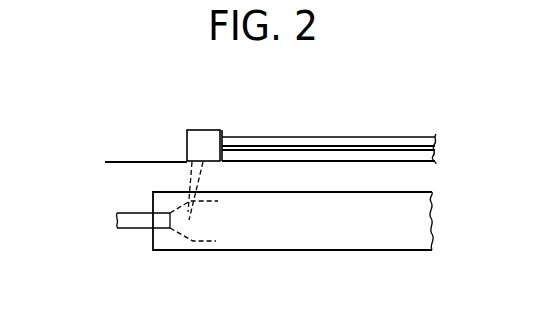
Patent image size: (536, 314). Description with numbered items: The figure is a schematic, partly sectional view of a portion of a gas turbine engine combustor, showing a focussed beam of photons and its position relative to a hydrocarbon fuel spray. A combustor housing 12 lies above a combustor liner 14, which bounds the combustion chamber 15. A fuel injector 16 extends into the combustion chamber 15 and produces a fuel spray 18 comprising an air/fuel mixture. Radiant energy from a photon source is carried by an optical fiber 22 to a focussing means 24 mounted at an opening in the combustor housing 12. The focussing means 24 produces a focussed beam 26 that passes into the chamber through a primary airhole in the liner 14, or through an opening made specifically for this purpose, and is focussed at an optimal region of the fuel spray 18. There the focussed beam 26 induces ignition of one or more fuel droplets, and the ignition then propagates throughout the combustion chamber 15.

The combustor housing 12 is at (138, 160).
The combustor liner 14 is at (413, 193).
The combustion chamber 15 is at (217, 219).
The fuel injector 16 is at (130, 230).
The fuel spray 18 is at (195, 242).
The optical fiber 22 is at (263, 137).
The focussing means 24 is at (203, 130).
The focussed beam 26 is at (188, 173).